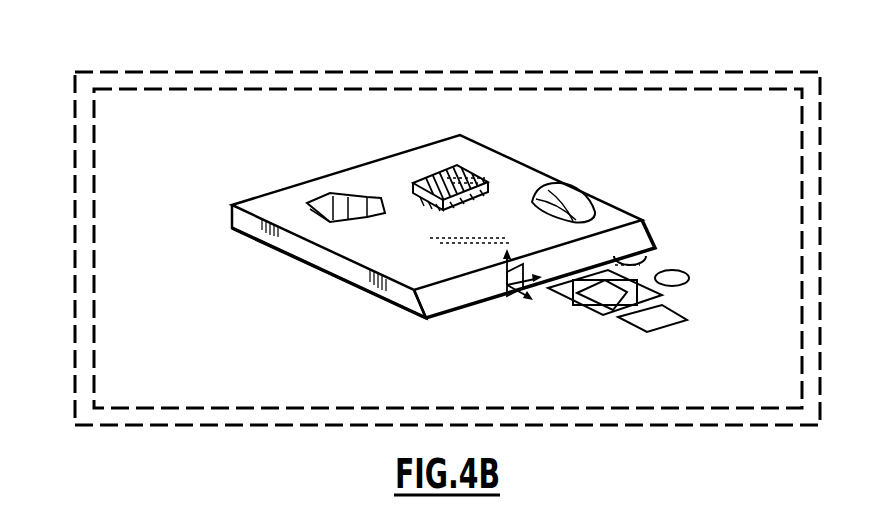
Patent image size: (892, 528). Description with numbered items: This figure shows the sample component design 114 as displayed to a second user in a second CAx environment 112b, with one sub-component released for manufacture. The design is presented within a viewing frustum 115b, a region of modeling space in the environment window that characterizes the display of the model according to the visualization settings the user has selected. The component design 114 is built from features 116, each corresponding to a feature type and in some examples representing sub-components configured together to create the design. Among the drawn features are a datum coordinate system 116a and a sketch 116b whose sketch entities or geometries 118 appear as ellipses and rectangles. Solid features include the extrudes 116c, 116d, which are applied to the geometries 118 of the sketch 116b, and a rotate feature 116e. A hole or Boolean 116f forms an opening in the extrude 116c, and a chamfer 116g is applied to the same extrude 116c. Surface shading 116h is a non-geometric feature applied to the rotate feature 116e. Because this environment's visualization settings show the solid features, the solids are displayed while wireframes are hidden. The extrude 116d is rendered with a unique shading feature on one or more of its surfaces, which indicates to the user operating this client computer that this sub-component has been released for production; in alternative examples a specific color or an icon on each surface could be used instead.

The second CAx environment 112b is at (221, 73).
The viewing frustum 115b is at (128, 90).
The component design 114 is at (219, 168).
The features 116 is at (675, 270).
The datum coordinate system 116a is at (497, 287).
The sketch 116b is at (706, 288).
The extrude 116c is at (530, 168).
The extrude 116d is at (463, 174).
The rotate feature 116e is at (592, 209).
The hole or Boolean 116f is at (345, 197).
The chamfer 116g is at (430, 300).
The surface shading 116h is at (565, 183).
The sketch entities or geometries 118 is at (450, 316).